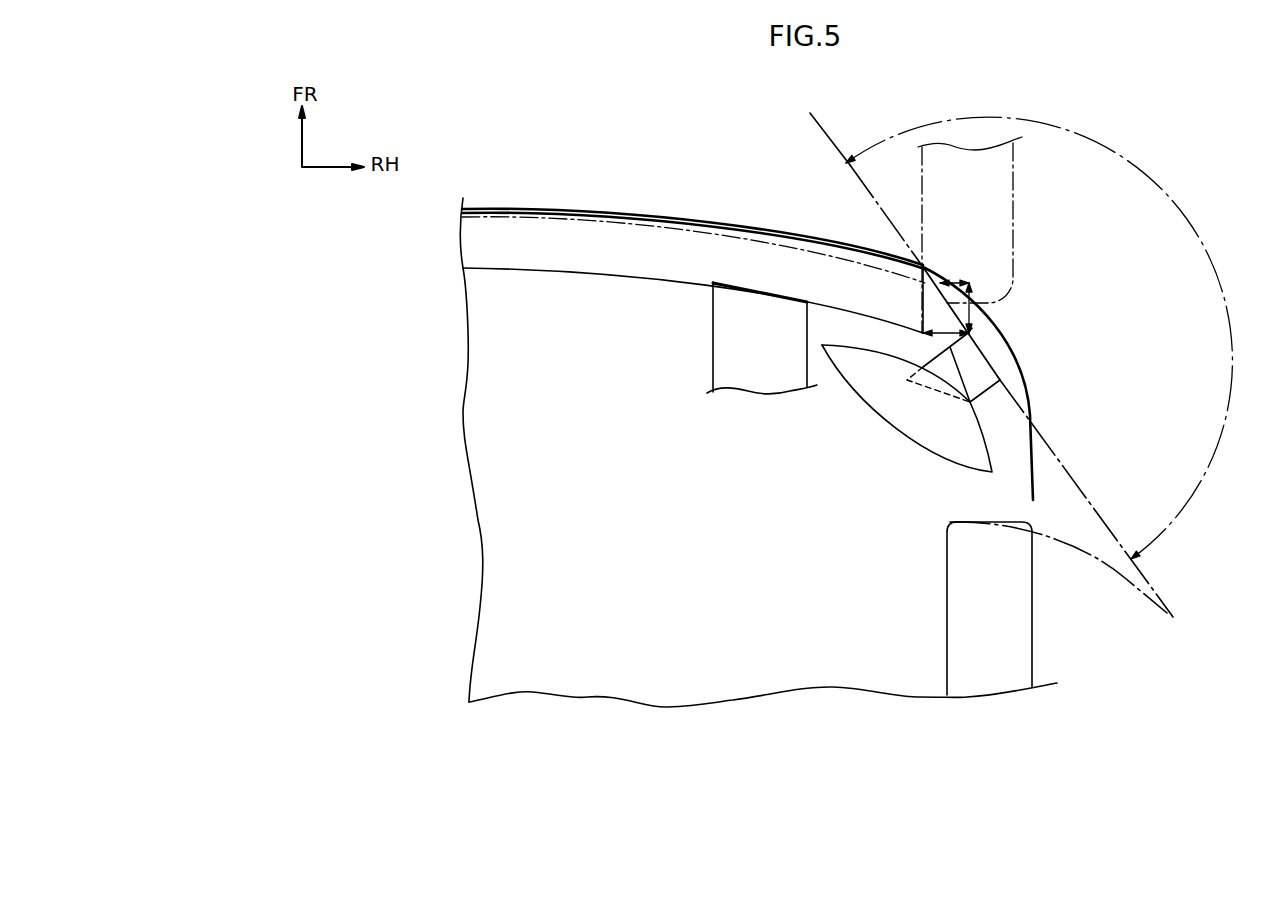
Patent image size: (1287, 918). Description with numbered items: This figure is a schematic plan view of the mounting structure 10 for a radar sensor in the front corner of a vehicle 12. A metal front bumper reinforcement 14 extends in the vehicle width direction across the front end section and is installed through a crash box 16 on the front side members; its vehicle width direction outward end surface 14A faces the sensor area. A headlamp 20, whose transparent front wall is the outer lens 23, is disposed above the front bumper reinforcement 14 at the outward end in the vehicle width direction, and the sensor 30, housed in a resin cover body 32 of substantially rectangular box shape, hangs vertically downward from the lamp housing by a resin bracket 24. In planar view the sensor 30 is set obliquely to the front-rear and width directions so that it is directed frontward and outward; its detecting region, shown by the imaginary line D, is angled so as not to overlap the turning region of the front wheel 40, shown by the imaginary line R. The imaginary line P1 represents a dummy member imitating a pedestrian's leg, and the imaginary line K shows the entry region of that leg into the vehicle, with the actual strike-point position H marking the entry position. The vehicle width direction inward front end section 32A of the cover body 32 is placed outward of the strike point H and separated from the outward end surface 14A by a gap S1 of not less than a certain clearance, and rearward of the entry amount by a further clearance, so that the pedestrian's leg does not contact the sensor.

The mounting structure 10 is at (1065, 420).
The vehicle 12 is at (502, 470).
The front bumper reinforcement 14 is at (693, 297).
The outward end surface of front bumper reinforcement 14A is at (918, 324).
The crash box 16 is at (733, 360).
The headlamp 20 is at (897, 432).
The outer lens 23 is at (887, 402).
The bracket 24 is at (951, 368).
The sensor 30 is at (1013, 368).
The cover body 32 is at (993, 380).
The inward front end section of cover body 32A is at (972, 323).
The front wheel 40 is at (960, 630).
The entry region of pedestrian K is at (753, 215).
The detecting region D is at (1200, 227).
The dummy member P1 is at (1015, 197).
The actual strike-point position H is at (940, 282).
The gap S1 is at (922, 328).
The turning region of front wheel R is at (1163, 607).